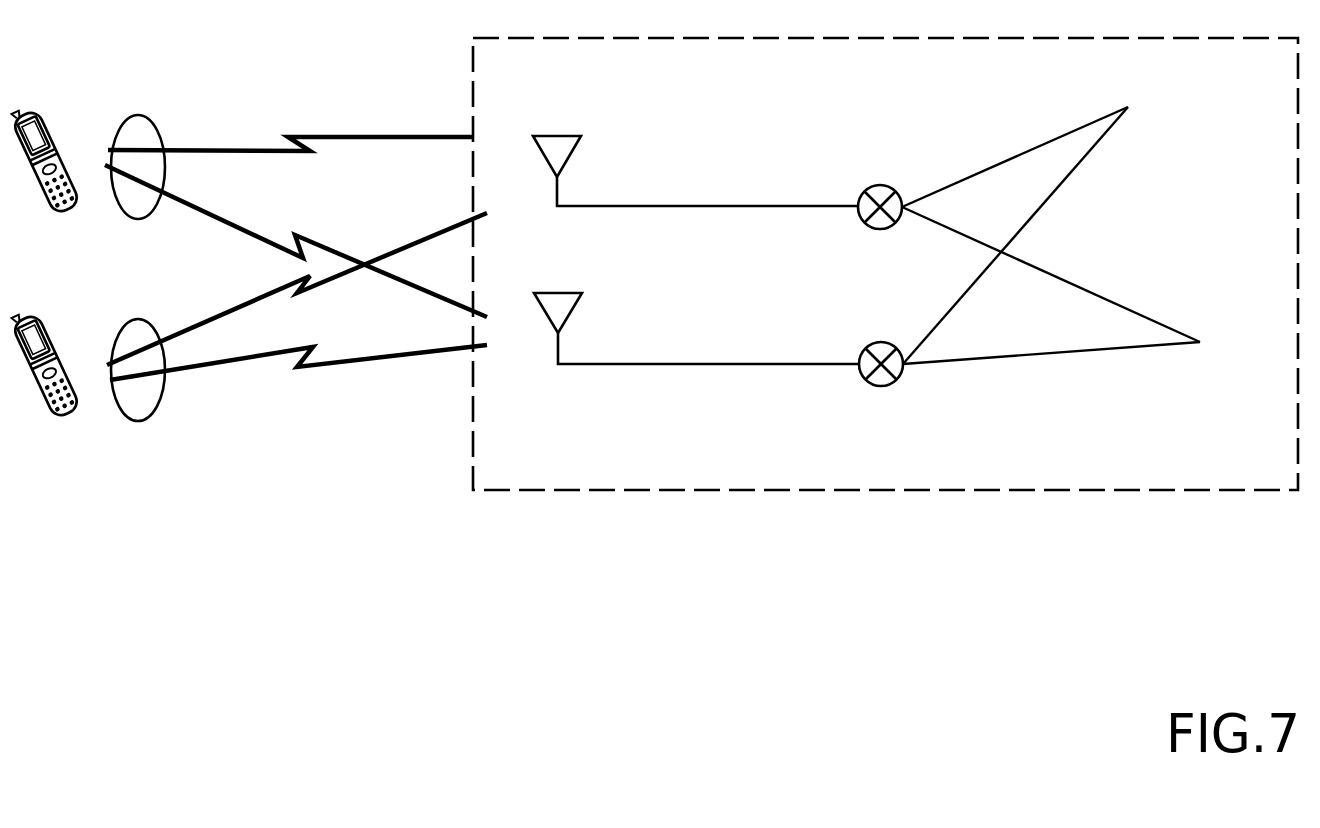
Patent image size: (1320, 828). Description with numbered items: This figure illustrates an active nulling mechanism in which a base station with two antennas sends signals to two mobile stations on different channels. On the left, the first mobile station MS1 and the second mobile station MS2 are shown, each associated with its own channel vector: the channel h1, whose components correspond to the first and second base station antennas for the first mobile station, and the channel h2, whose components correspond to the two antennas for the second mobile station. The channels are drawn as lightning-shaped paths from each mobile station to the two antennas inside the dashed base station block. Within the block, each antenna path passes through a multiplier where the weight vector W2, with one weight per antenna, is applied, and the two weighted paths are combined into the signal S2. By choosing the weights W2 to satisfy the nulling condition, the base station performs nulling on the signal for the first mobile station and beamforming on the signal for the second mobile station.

The first mobile station MS1 is at (45, 175).
The second mobile station MS2 is at (45, 379).
The channel vector of first mobile station h1 is at (174, 145).
The channel vector of second mobile station h2 is at (177, 394).
The weight vector W2 is at (1057, 217).
The combined transmit signal for second mobile station S2 is at (1224, 329).